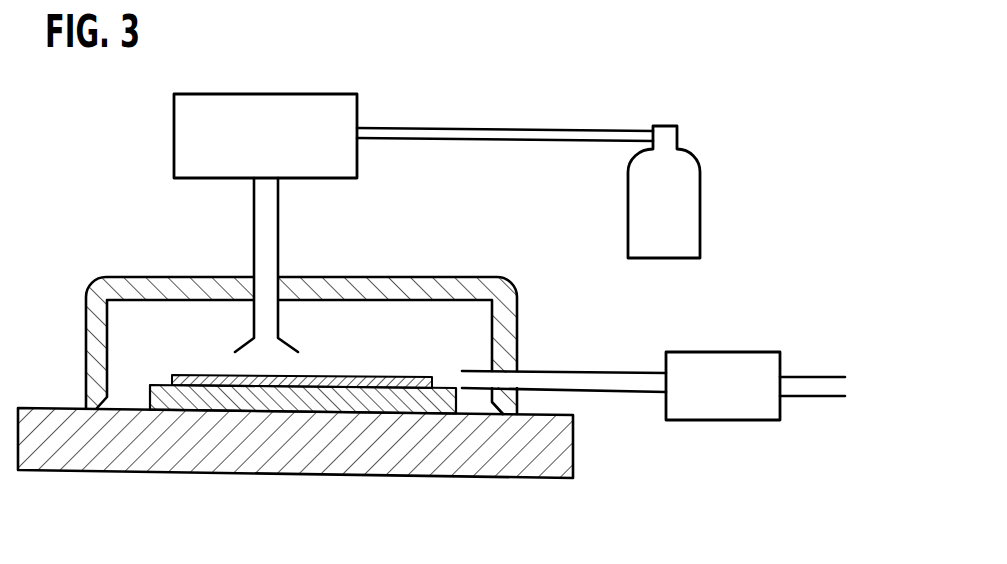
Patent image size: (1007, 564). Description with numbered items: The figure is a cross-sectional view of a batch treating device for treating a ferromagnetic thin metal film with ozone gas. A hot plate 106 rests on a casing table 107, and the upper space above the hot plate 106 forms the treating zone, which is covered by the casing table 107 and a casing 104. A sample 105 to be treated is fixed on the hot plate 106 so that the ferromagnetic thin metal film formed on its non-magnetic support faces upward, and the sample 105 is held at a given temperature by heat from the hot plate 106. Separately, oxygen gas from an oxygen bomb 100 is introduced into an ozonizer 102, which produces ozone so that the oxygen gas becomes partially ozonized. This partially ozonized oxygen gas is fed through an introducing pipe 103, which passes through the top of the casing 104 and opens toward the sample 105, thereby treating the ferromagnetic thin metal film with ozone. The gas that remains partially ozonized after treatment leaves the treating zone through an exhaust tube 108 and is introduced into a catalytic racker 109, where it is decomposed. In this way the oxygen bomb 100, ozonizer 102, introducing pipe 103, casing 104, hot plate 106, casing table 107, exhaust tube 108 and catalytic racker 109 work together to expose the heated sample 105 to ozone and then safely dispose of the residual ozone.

The oxygen bomb 100 is at (700, 177).
The ozonizer 102 is at (357, 116).
The introducing pipe 103 is at (273, 240).
The casing 104 is at (436, 277).
The sample 105 is at (406, 376).
The hot plate 106 is at (339, 394).
The casing table 107 is at (573, 452).
The exhaust tube 108 is at (597, 381).
The catalytic racker 109 is at (775, 377).